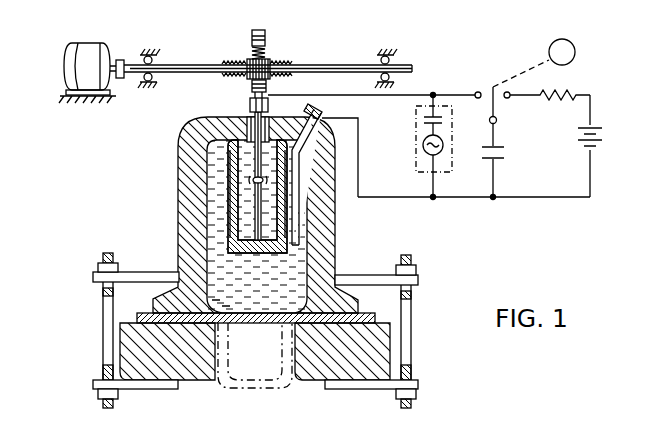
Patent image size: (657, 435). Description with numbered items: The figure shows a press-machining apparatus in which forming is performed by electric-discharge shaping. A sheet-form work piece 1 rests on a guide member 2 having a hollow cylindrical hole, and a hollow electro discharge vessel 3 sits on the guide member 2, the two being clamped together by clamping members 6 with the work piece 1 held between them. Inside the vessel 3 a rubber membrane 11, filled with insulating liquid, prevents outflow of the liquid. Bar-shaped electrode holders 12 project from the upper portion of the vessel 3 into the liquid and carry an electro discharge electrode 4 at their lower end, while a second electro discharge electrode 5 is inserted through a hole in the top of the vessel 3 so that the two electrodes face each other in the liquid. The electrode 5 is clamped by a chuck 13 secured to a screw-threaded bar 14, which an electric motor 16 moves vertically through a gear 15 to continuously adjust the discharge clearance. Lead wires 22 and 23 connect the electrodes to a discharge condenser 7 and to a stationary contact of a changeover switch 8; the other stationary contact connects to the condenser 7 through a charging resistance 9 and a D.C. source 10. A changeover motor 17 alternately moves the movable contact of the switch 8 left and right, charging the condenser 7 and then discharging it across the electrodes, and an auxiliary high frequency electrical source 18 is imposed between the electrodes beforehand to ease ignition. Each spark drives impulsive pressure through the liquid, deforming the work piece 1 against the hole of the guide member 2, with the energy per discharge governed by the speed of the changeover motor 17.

The work piece 1 is at (275, 389).
The guide member 2 is at (205, 381).
The hollow electro discharge vessel 3 is at (180, 211).
The electro discharge electrode 4 is at (255, 257).
The electro discharge electrode 5 is at (268, 110).
The clamping members 6 is at (104, 318).
The discharge condenser 7 is at (505, 156).
The changeover switch 8 is at (512, 103).
The charging resistance 9 is at (552, 103).
The D.C. source 10 is at (597, 138).
The rubber membrane 11 is at (229, 293).
The electrode holders 12 is at (232, 205).
The chuck 13 is at (248, 104).
The screw-threaded bar 14 is at (266, 33).
The gear 15 is at (270, 63).
The electric motor 16 is at (106, 49).
The changeover motor 17 is at (577, 45).
The auxiliary high frequency electrical source 18 is at (442, 167).
The lead wire 22 is at (368, 99).
The lead wire 23 is at (360, 143).